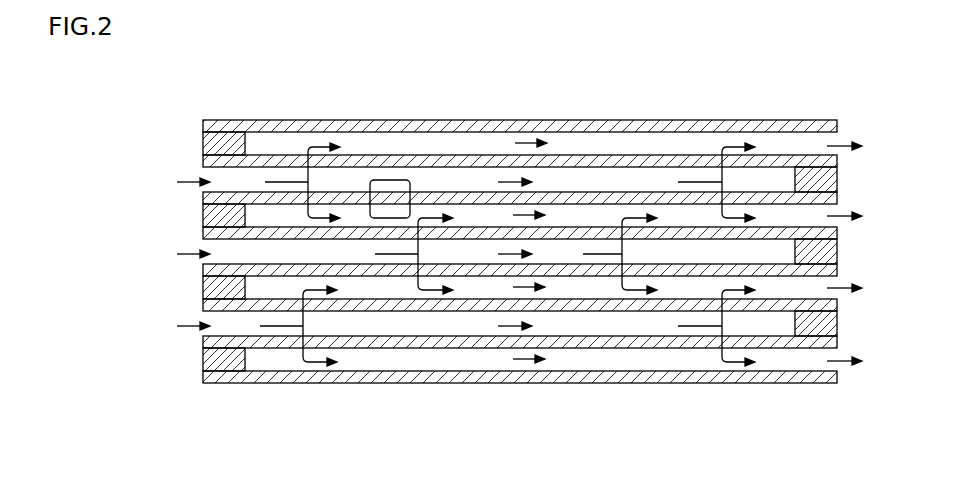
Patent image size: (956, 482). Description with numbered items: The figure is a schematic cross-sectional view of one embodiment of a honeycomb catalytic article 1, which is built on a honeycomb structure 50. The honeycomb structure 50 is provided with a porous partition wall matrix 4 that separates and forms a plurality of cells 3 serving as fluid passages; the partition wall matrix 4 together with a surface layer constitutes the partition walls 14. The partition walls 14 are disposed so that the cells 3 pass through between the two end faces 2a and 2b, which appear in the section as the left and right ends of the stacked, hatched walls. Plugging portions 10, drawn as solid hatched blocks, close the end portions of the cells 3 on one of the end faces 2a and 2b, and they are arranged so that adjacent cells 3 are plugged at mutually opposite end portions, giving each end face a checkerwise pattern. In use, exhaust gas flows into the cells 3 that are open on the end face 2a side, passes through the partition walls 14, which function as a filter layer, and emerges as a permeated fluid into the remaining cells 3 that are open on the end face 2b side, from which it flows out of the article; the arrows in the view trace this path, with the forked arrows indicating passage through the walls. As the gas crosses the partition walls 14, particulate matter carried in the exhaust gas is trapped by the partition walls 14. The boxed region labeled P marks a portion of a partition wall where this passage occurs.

The honeycomb catalytic article 1 is at (441, 246).
The honeycomb structure 50 is at (404, 101).
The end face 2a is at (204, 107).
The end face 2b is at (837, 108).
The cells 3 is at (625, 145).
The partition wall matrix 4 is at (520, 357).
The partition walls 14 is at (437, 310).
The plugging portions 10 is at (203, 288).
The flow passage portion P is at (405, 176).